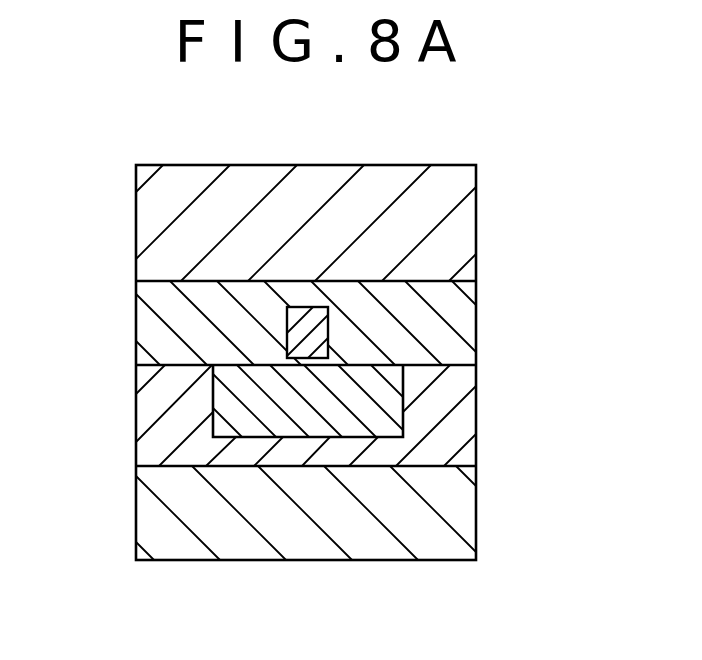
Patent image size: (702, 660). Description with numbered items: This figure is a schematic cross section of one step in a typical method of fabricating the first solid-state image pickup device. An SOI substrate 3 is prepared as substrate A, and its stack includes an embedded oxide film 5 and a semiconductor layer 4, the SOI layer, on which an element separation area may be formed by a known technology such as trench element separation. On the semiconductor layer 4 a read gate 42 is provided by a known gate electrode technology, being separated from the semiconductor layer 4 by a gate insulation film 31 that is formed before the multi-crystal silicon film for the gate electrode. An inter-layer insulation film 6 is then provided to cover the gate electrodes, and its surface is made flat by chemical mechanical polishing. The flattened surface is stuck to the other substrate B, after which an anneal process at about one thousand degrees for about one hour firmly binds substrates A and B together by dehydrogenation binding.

The substrate B is at (460, 193).
The read gate 42 is at (316, 315).
The gate insulation film 31 is at (330, 362).
The semiconductor layer 4 is at (390, 375).
The inter-layer insulation film 6 is at (152, 323).
The embedded oxide film 5 is at (158, 426).
The SOI substrate 3 is at (483, 366).
The substrate A is at (457, 548).